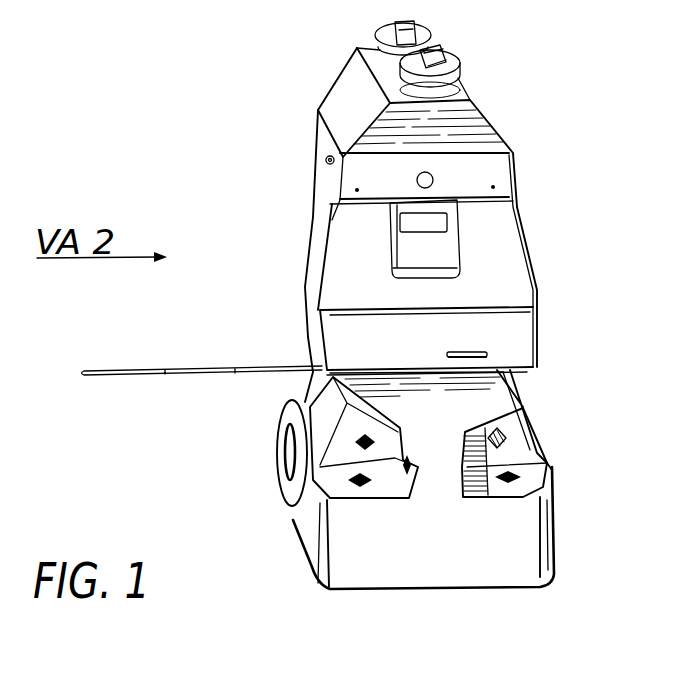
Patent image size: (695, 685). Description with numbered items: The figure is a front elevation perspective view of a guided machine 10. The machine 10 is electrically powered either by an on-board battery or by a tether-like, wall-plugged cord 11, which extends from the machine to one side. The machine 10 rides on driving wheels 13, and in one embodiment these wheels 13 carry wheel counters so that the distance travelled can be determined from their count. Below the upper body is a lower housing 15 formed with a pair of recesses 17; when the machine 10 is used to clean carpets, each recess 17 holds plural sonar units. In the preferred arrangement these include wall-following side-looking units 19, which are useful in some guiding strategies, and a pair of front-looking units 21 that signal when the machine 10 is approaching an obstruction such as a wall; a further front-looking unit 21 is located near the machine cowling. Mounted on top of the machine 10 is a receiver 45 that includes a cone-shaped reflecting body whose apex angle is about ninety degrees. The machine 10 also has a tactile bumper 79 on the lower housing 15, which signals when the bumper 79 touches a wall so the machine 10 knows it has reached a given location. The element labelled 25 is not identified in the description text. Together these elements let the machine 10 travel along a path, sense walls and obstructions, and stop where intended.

The machine 10 is at (265, 190).
The wall-plugged cord 11 is at (148, 370).
The driving wheels 13 is at (280, 417).
The lower housing 15 is at (347, 565).
The recesses 17 is at (335, 472).
The side-looking units 19 is at (403, 458).
The front-looking units 21 is at (434, 178).
The head panel band 25 is at (507, 190).
The receiver 45 is at (481, 44).
The tactile bumper 79 is at (513, 565).